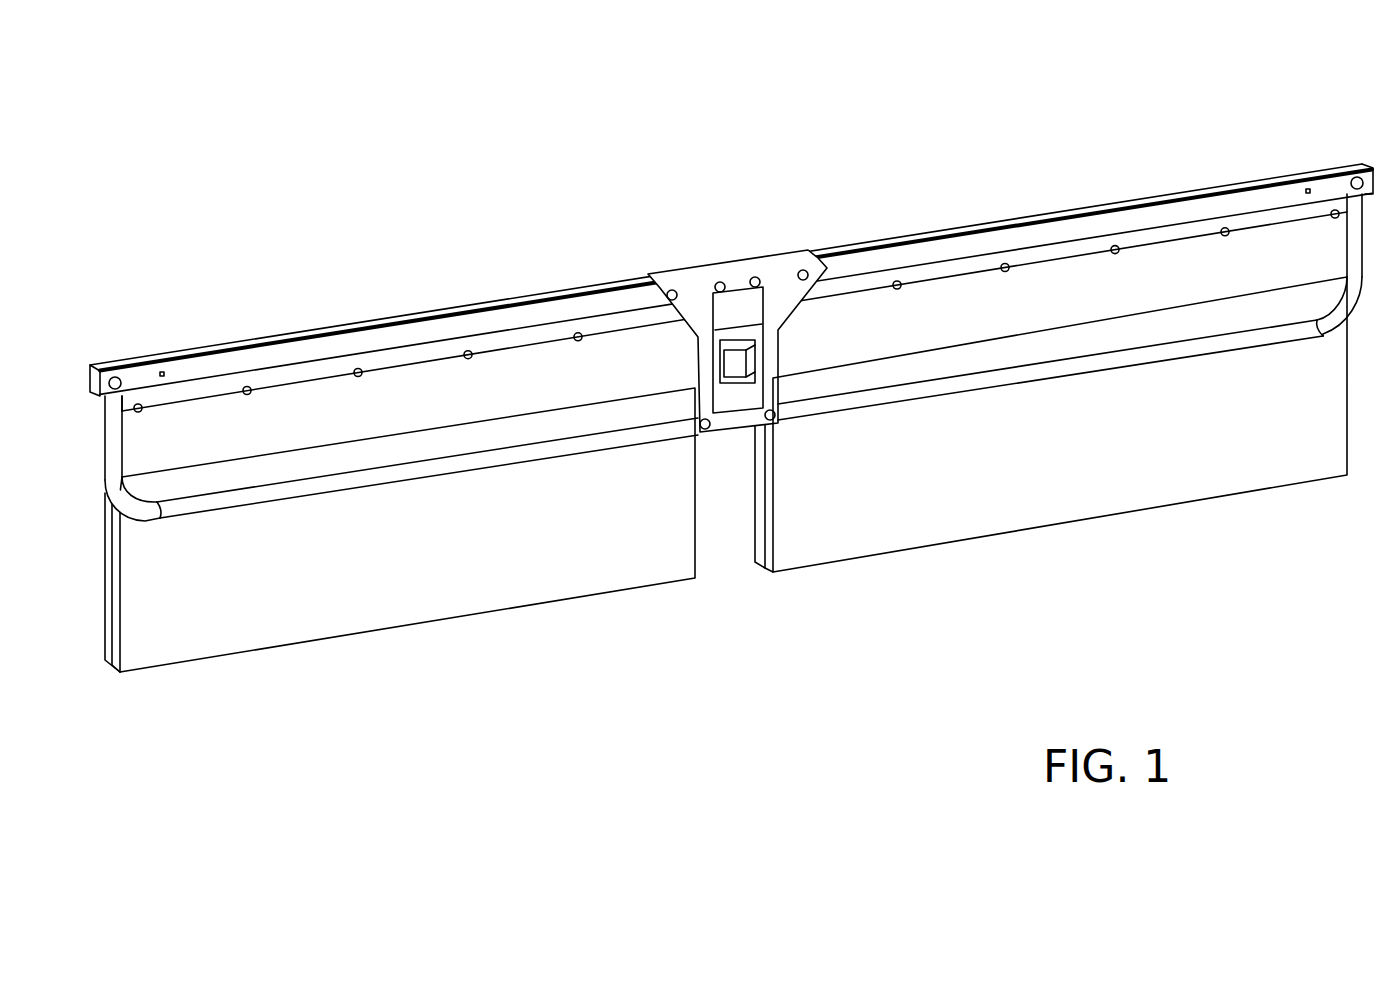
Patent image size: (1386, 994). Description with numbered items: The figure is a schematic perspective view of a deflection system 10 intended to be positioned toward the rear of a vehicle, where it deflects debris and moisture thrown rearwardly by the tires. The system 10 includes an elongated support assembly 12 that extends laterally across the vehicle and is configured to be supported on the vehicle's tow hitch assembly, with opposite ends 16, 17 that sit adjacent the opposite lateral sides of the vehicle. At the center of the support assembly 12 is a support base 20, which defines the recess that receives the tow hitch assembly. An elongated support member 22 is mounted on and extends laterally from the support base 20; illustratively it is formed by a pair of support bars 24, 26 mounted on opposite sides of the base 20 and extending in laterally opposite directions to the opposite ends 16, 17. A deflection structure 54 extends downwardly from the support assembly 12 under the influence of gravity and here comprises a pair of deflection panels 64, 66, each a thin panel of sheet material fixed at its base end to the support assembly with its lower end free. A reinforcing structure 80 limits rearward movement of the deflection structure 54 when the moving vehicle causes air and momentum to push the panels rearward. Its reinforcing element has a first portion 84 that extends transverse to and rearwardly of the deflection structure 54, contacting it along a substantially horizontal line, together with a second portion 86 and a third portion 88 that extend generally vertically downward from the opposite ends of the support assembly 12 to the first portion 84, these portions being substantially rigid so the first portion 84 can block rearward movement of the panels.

The system 10 is at (1202, 126).
The support assembly 12 is at (915, 205).
The opposite end 16 is at (93, 362).
The opposite end 17 is at (1362, 163).
The support base 20 is at (737, 262).
The elongated support member 22 is at (612, 258).
The support bar 24 is at (352, 324).
The support bar 26 is at (1040, 220).
The deflection structure 54 is at (397, 662).
The deflection panel 64 is at (588, 580).
The deflection panel 66 is at (936, 518).
The reinforcing structure 80 is at (216, 534).
The first portion 84 is at (280, 498).
The second portion 86 is at (123, 446).
The third portion 88 is at (1347, 240).